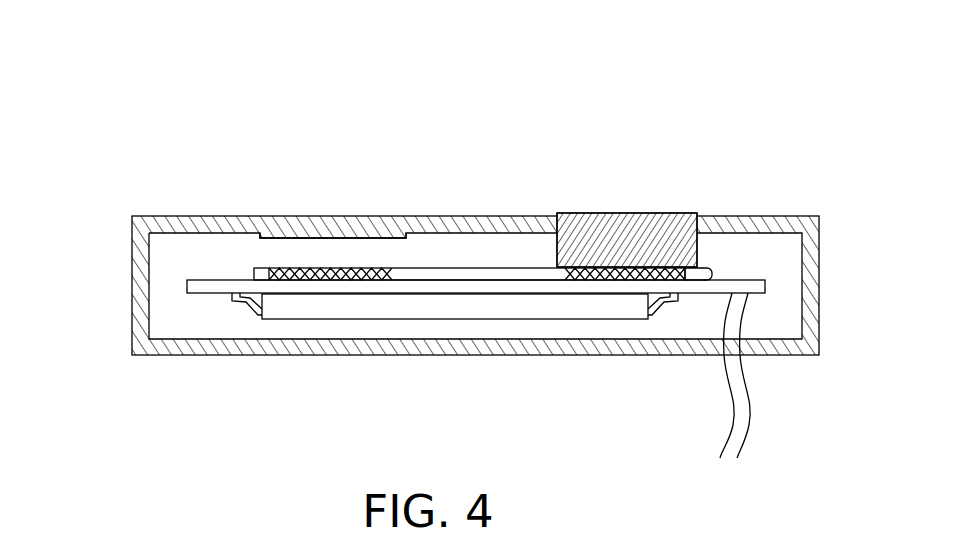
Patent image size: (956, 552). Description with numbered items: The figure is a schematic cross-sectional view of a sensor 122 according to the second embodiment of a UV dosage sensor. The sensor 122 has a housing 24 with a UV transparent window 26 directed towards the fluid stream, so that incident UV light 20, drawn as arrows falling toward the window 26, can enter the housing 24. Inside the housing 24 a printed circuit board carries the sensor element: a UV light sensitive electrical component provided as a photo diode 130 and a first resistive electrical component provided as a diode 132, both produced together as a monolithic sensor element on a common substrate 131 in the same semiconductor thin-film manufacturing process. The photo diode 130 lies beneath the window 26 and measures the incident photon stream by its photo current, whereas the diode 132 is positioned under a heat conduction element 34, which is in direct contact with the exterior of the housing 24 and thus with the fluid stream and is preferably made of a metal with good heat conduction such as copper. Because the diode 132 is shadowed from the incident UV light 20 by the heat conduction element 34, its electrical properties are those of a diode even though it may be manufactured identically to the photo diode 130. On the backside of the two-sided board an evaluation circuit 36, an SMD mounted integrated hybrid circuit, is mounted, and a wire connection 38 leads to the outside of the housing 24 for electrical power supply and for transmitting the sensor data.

The incident UV light 20 is at (365, 188).
The housing 24 is at (140, 328).
The UV transparent window 26 is at (398, 230).
The heat conduction element 34 is at (638, 216).
The evaluation circuit 36 is at (445, 319).
The wire connection 38 is at (740, 407).
The sensor 122 is at (110, 277).
The photo diode 130 is at (267, 268).
The common substrate 131 is at (500, 270).
The diode 132 is at (712, 273).